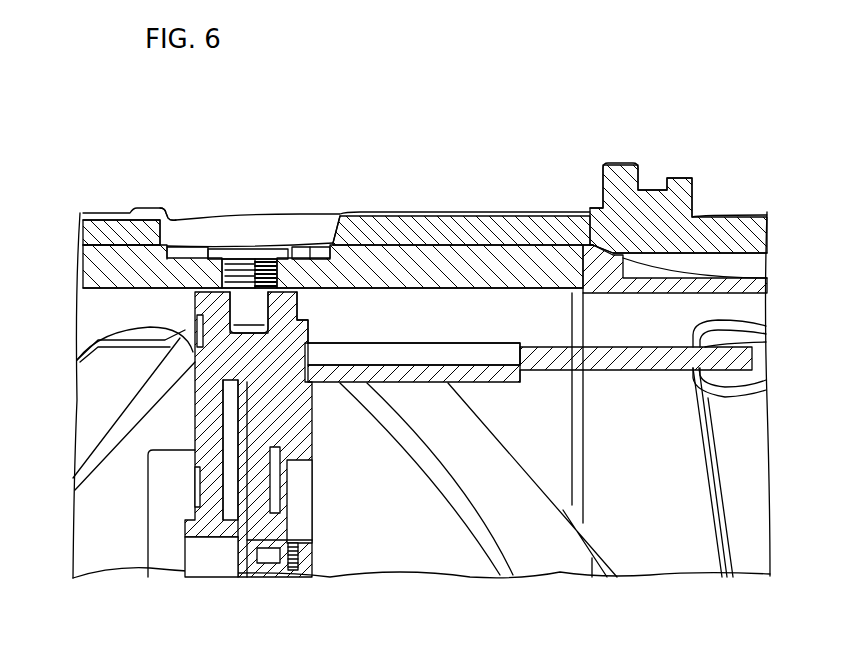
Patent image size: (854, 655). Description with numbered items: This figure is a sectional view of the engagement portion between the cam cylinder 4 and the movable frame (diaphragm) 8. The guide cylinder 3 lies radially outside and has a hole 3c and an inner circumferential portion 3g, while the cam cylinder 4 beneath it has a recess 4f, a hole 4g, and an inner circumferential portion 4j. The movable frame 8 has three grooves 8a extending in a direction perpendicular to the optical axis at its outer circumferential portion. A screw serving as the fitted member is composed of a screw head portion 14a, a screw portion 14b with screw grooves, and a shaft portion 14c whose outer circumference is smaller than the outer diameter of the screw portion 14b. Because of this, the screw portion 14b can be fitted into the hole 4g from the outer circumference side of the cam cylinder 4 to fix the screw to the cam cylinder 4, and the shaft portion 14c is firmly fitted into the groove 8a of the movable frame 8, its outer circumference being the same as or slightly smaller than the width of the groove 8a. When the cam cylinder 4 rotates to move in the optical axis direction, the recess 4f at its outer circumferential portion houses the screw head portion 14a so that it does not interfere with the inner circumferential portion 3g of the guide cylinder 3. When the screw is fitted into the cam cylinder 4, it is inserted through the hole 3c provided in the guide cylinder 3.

The guide cylinder 3 is at (673, 223).
The hole 3c is at (167, 219).
The inner circumferential portion 3g is at (118, 244).
The cam cylinder 4 is at (537, 273).
The recess 4f is at (312, 256).
The hole 4g is at (258, 270).
The inner circumferential portion 4j is at (128, 289).
The movable frame (diaphragm) 8 is at (195, 385).
The groove 8a is at (328, 303).
The screw head portion 14a is at (222, 270).
The screw portion 14b is at (240, 272).
The shaft portion 14c is at (266, 317).